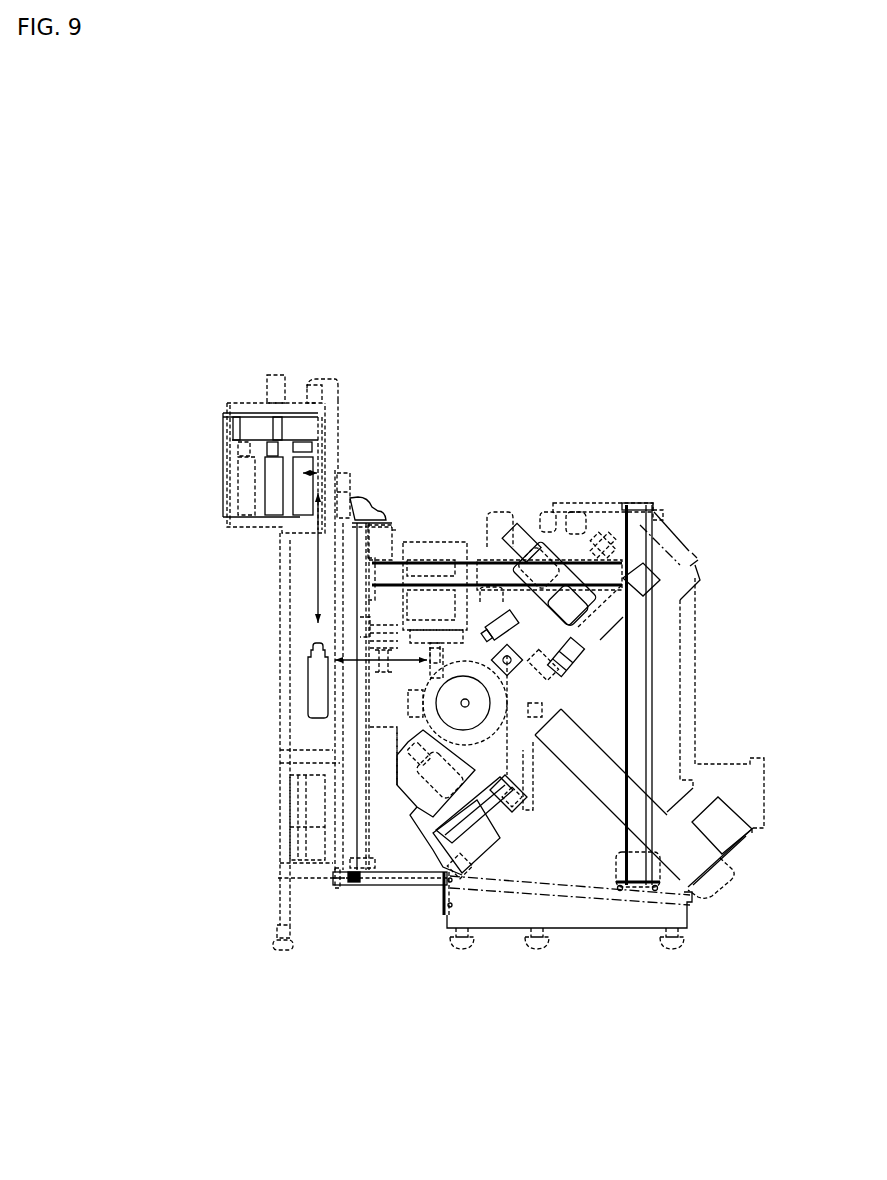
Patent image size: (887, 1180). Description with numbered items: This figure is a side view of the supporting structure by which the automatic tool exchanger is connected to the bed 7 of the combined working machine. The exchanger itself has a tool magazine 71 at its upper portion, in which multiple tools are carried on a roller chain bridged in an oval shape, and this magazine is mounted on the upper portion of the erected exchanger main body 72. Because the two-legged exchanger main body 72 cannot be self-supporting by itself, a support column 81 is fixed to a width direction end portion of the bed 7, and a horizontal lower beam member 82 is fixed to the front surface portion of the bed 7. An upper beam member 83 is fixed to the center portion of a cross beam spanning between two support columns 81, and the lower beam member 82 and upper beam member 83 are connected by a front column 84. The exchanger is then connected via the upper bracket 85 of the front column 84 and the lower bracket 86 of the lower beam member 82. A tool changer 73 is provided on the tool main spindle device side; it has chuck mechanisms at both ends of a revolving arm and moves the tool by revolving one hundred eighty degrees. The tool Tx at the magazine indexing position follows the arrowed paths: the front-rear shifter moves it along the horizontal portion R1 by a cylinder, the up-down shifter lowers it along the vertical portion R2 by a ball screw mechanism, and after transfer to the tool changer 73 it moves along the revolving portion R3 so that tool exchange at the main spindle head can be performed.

The bed 7 is at (612, 913).
The tool magazine 71 is at (227, 478).
The exchanger main body 72 is at (290, 630).
The tool changer 73 is at (388, 614).
The support column 81 is at (640, 693).
The lower beam member 82 is at (411, 880).
The upper beam member 83 is at (483, 562).
The front column 84 is at (362, 780).
The upper bracket 85 is at (352, 512).
The lower bracket 86 is at (347, 887).
The tool Tx is at (298, 485).
The horizontal portion R1 is at (318, 470).
The vertical portion R2 is at (318, 565).
The revolving portion R3 is at (412, 667).